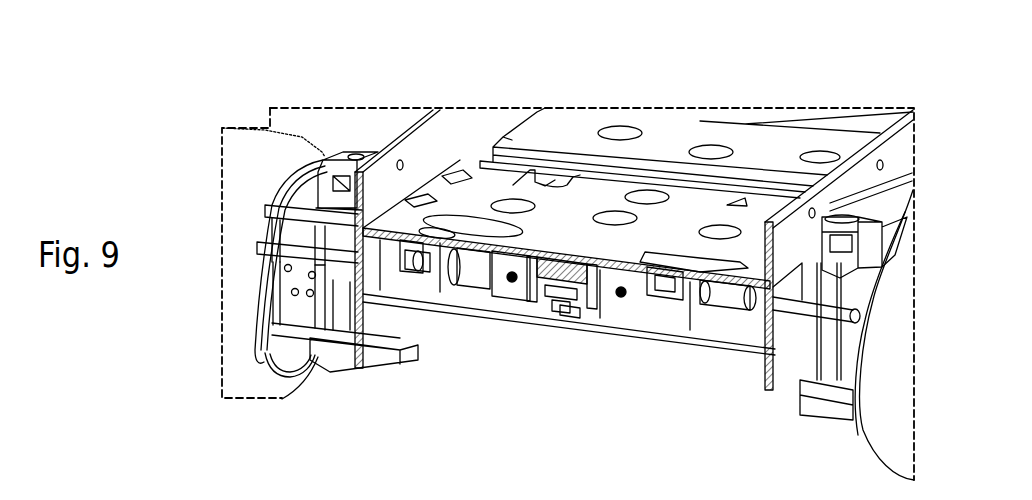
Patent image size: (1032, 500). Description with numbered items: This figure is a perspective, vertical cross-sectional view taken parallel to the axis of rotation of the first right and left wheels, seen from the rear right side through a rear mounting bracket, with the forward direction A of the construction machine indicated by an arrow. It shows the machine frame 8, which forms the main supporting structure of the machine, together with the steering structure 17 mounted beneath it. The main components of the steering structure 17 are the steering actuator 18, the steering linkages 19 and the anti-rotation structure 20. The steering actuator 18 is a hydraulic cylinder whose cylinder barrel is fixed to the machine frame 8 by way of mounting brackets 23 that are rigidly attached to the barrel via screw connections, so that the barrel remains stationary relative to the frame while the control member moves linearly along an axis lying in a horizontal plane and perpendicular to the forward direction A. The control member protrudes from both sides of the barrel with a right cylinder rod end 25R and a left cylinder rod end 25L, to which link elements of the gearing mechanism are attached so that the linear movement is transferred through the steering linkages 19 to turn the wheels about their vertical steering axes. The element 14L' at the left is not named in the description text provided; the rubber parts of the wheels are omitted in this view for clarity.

The left fender 14L' is at (253, 210).
The left cylinder rod end 25L is at (474, 263).
The machine frame 8 is at (647, 302).
The steering actuator 18 is at (496, 278).
The mounting brackets 23 is at (548, 292).
The anti-rotation structure 20 is at (582, 332).
The right cylinder rod end 25R is at (716, 305).
The steering structure 17 is at (452, 358).
The steering linkages 19 is at (342, 250).
The forward direction A is at (555, 93).